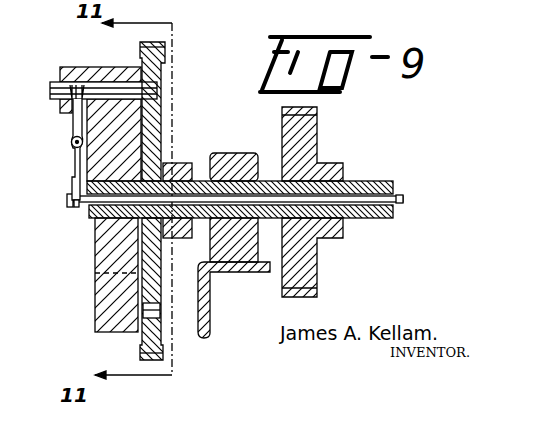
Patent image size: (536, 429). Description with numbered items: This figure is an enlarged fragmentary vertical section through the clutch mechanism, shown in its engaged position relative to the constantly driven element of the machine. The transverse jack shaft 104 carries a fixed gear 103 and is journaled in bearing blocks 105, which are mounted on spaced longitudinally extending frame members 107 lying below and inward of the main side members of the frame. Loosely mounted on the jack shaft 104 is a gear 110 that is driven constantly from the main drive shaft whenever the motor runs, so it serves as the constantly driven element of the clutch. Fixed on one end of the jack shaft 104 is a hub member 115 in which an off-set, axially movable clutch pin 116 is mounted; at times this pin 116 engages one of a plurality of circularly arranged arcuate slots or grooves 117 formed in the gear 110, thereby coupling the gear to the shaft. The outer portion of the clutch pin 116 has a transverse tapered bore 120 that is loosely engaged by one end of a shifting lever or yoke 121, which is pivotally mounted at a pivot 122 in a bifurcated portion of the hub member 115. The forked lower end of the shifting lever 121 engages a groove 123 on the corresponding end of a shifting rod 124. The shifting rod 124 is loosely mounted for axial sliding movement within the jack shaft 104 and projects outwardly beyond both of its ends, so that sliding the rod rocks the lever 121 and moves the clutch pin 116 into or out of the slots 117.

The gear 103 is at (310, 128).
The jack shaft 104 is at (370, 182).
The bearing blocks 105 is at (235, 153).
The frame members 107 is at (210, 320).
The gear 110 is at (142, 55).
The hub member 115 is at (97, 72).
The clutch pin 116 is at (53, 90).
The arcuate slots 117 is at (152, 312).
The tapered bore 120 is at (73, 83).
The shifting lever 121 is at (72, 123).
The pivot 122 is at (72, 143).
The groove 123 is at (76, 207).
The shifting rod 124 is at (67, 199).